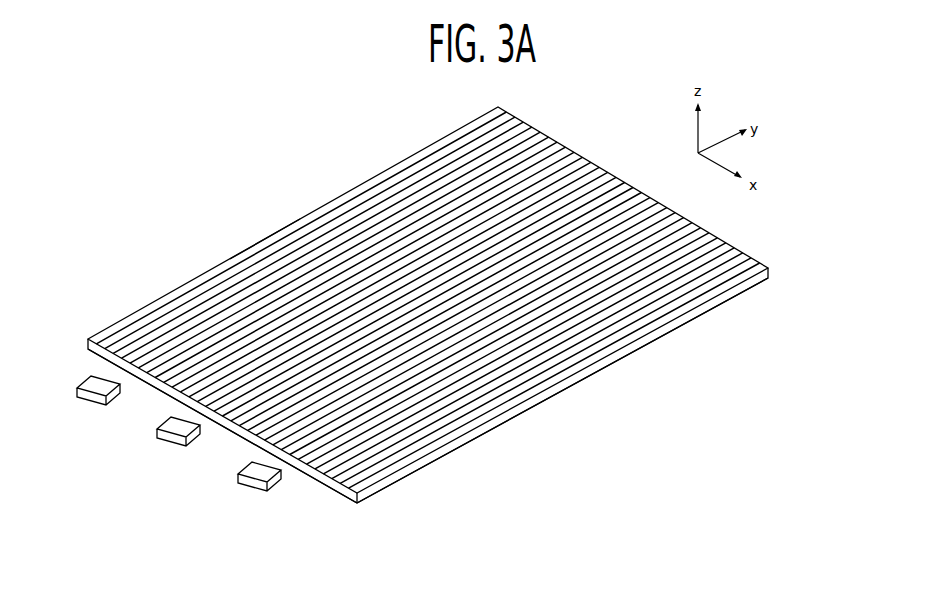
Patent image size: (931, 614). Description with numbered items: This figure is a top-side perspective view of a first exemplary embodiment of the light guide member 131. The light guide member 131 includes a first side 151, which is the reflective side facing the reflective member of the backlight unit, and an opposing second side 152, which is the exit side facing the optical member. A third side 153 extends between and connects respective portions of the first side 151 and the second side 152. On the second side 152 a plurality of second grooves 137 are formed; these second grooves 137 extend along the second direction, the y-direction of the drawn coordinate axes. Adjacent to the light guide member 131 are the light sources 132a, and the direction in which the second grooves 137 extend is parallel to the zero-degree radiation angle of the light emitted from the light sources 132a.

The light guide member 131 is at (770, 270).
The second side 152 is at (406, 155).
The second grooves 137 is at (262, 240).
The first side 151 is at (656, 339).
The third side 153 is at (318, 483).
The light sources 132a is at (92, 373).